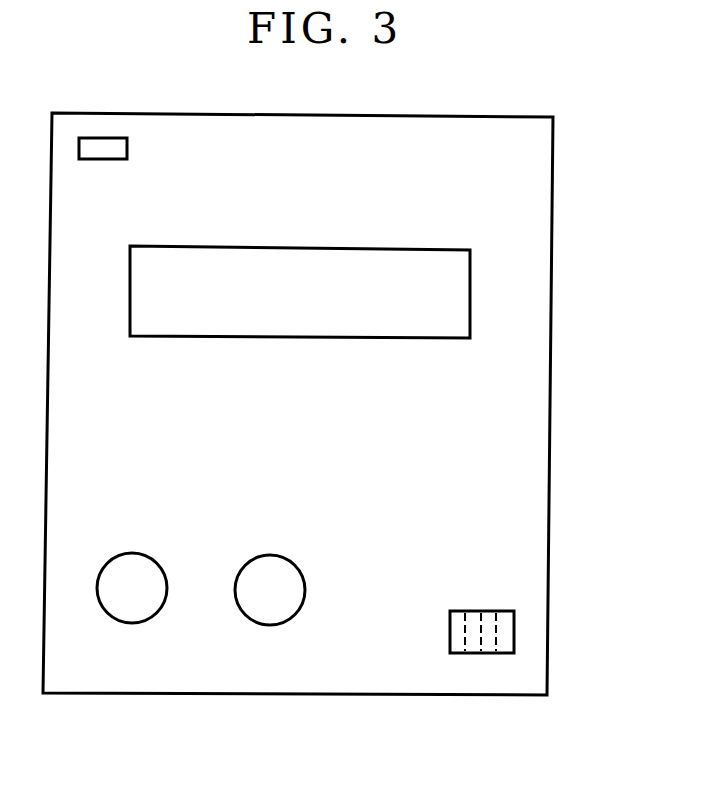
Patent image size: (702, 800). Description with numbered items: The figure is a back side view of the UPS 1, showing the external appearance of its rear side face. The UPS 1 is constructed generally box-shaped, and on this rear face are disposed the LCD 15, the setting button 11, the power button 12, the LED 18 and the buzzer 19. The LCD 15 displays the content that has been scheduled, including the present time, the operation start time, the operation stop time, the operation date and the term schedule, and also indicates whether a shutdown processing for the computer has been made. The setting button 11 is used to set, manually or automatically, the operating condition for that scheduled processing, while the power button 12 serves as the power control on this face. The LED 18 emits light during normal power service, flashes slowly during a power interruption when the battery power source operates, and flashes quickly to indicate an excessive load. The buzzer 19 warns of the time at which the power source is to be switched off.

The UPS 1 is at (365, 668).
The setting button 11 is at (258, 612).
The power button 12 is at (130, 615).
The LCD 15 is at (460, 302).
The LED 18 is at (110, 143).
The buzzer 19 is at (505, 633).